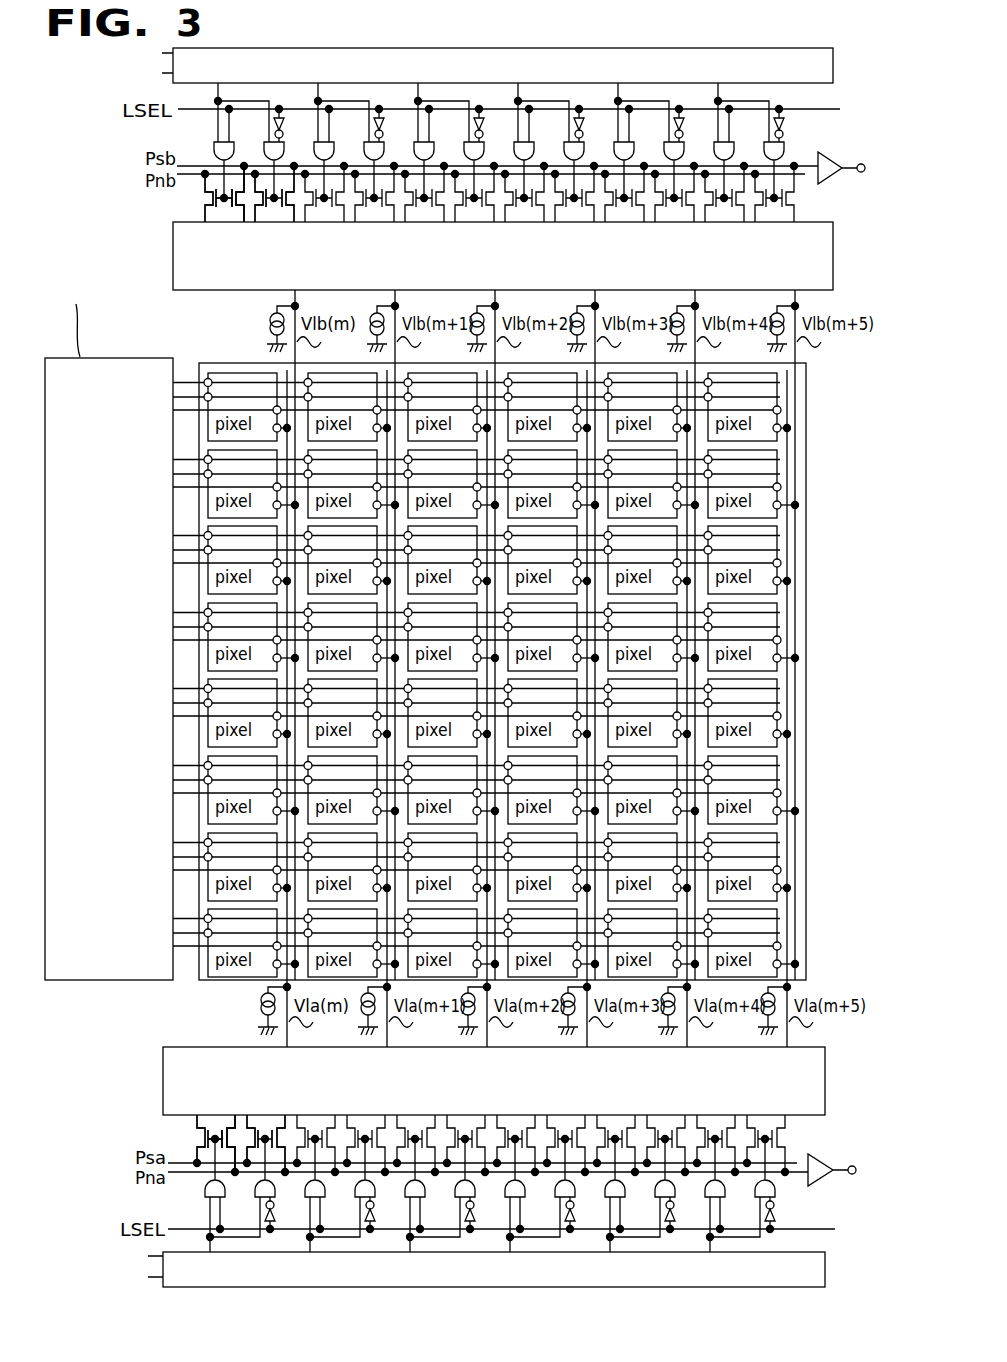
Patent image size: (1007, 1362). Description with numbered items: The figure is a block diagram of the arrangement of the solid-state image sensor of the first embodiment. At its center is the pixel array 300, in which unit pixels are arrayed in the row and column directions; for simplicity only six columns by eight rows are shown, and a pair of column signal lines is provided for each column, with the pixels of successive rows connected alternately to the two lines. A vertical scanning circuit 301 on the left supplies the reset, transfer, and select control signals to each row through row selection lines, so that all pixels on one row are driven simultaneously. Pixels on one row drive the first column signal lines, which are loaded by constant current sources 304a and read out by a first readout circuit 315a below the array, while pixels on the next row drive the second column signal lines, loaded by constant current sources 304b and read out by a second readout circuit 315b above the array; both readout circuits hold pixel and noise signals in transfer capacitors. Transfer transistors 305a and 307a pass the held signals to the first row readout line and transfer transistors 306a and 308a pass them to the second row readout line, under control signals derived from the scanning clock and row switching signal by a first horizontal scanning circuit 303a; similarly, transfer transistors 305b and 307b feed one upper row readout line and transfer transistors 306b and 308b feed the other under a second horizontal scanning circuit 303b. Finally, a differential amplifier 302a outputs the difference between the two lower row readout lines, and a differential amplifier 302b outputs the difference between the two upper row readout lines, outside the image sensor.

The pixel array 300 is at (807, 380).
The vertical scanning circuit 301 is at (143, 357).
The differential amplifier 302a is at (822, 1182).
The differential amplifier 302b is at (833, 161).
The first horizontal scanning circuit 303a is at (803, 1241).
The second horizontal scanning circuit 303b is at (777, 83).
The constant current source 304a is at (262, 1003).
The constant current source 304b is at (268, 320).
The transfer transistor 305a is at (200, 1138).
The transfer transistor 305b is at (202, 196).
The transfer transistor 306a is at (230, 1129).
The transfer transistor 306b is at (240, 211).
The transfer transistor 307a is at (251, 1130).
The transfer transistor 307b is at (258, 208).
The transfer transistor 308a is at (280, 1128).
The transfer transistor 308b is at (292, 210).
The first readout circuit 315a is at (817, 1116).
The second readout circuit 315b is at (830, 212).